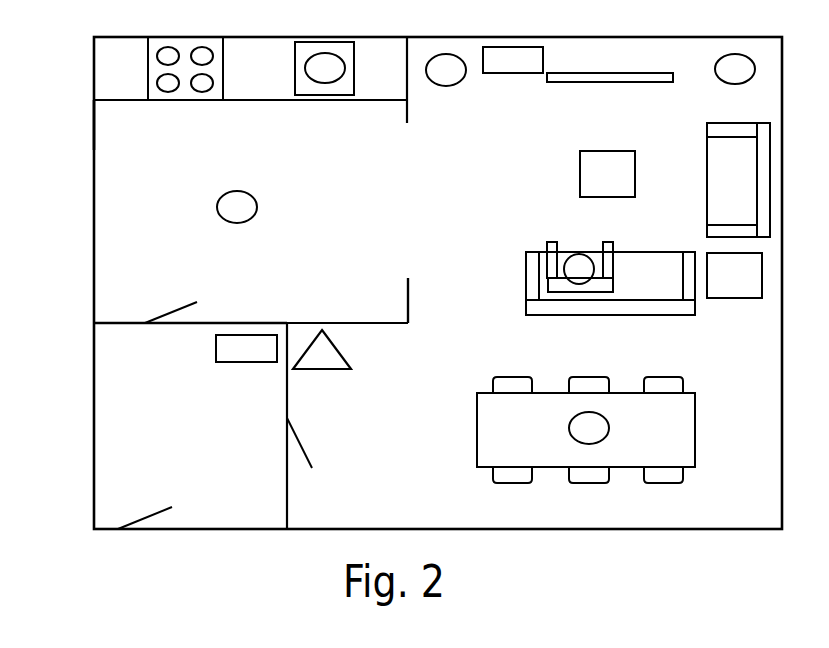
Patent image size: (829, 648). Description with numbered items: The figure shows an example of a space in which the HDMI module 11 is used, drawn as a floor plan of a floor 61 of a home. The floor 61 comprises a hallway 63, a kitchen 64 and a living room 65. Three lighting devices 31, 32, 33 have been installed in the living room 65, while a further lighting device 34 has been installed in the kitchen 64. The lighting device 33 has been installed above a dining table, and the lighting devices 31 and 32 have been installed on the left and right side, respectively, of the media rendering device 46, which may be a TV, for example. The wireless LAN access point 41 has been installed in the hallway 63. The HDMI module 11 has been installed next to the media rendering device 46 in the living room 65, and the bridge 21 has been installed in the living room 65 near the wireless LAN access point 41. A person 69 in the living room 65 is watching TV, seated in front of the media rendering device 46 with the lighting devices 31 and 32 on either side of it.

The HDMI module 11 is at (513, 60).
The bridge 21 is at (322, 350).
The lighting device 31 is at (446, 70).
The lighting device 32 is at (735, 69).
The lighting device 33 is at (589, 428).
The lighting device 34 is at (237, 207).
The wireless LAN access point 41 is at (246, 348).
The media rendering device 46 is at (617, 71).
The floor 61 is at (93, 120).
The hallway 63 is at (147, 326).
The kitchen 64 is at (389, 300).
The living room 65 is at (303, 471).
The person 69 is at (562, 292).